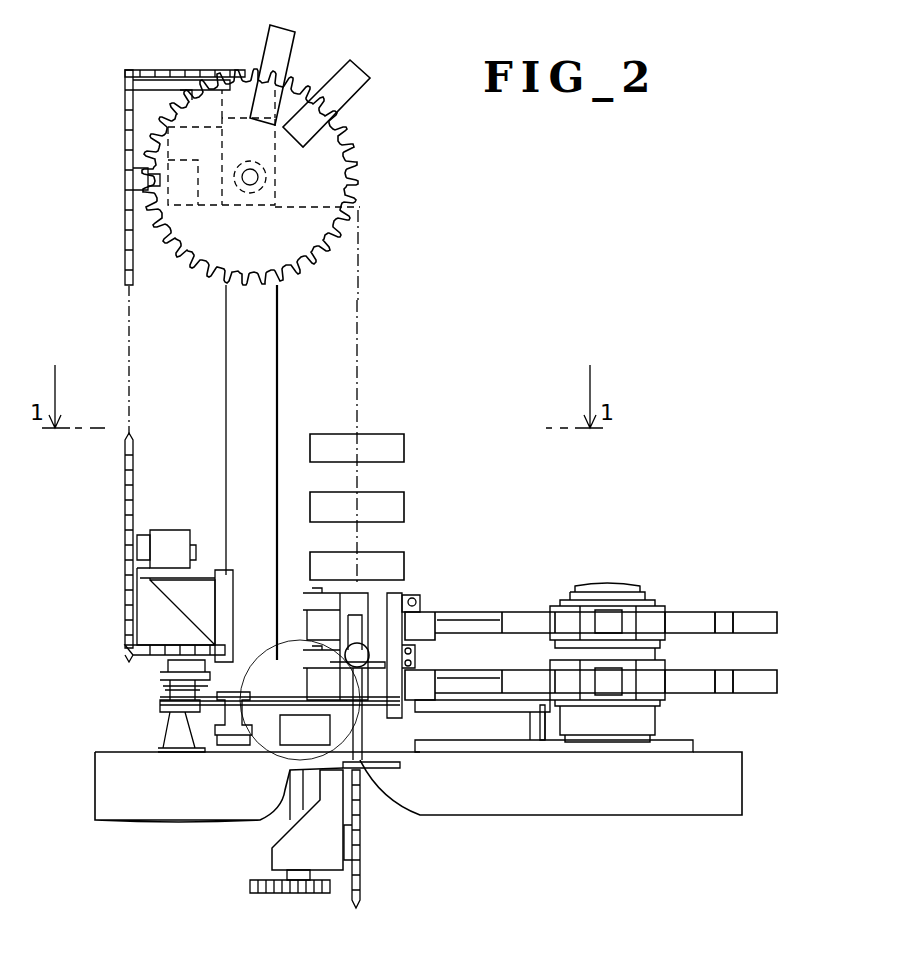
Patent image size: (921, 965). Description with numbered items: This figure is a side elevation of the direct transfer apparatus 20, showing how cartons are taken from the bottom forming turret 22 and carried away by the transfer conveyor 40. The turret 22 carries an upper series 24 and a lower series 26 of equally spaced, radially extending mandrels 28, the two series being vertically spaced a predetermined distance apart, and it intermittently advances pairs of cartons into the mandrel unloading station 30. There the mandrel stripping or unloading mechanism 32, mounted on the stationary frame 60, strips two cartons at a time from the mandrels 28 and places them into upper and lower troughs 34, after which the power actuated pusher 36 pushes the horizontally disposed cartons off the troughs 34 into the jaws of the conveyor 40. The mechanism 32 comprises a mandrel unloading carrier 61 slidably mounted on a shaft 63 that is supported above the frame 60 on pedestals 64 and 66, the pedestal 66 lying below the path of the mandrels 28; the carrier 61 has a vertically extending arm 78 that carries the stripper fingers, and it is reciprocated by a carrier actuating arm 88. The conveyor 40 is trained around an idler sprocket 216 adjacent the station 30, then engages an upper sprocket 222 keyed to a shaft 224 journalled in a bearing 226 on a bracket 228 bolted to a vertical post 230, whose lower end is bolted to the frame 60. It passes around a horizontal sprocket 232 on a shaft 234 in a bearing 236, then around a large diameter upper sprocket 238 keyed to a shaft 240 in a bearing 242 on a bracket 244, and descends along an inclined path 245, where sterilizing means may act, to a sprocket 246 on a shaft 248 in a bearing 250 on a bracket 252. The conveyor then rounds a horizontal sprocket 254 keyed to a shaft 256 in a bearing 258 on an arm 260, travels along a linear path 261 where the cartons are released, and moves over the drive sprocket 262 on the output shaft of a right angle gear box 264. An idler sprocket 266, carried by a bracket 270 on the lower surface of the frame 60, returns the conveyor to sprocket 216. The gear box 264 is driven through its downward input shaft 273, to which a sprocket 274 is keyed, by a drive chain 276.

The direct transfer apparatus 20 is at (568, 236).
The bottom forming turret 22 is at (632, 580).
The upper series of mandrels 24 is at (782, 620).
The lower series of mandrels 26 is at (782, 686).
The mandrel 28 is at (735, 640).
The mandrel unloading station 30 is at (425, 637).
The mandrel stripping or unloading mechanism 32 is at (412, 592).
The troughs 34 is at (451, 614).
The power actuated pusher 36 is at (382, 661).
The transfer conveyor 40 is at (372, 311).
The stationary frame 60 is at (95, 756).
The mandrel unloading carrier 61 is at (392, 592).
The shaft 63 is at (514, 714).
The pedestal 64 is at (176, 748).
The pedestal 66 is at (543, 722).
The vertically extending arm 78 is at (396, 594).
The carrier actuating arm 88 is at (165, 703).
The idler sprocket 216 is at (360, 775).
The upper sprocket 222 is at (360, 166).
The shaft 224 is at (258, 172).
The bearing 226 is at (286, 182).
The bracket 228 is at (358, 220).
The vertical post 230 is at (232, 358).
The sprocket 232 is at (178, 68).
The shaft 234 is at (180, 90).
The bearing 236 is at (190, 98).
The large diameter upper sprocket 238 is at (125, 137).
The shaft 240 is at (130, 178).
The bearing 242 is at (264, 148).
The bracket 244 is at (125, 226).
The inclined path 245 is at (125, 327).
The sprocket 246 is at (124, 502).
The shaft 248 is at (137, 549).
The bearing 250 is at (170, 538).
The bracket 252 is at (185, 601).
The horizontal sprocket 254 is at (125, 643).
The shaft 256 is at (170, 666).
The bearing 258 is at (165, 684).
The arm 260 is at (235, 740).
The linear path 261 is at (232, 630).
The drive sprocket 262 is at (372, 762).
The right angle gear box 264 is at (305, 730).
The idler sprocket 266 is at (362, 890).
The bracket 270 is at (283, 852).
The input shaft 273 is at (295, 815).
The sprocket 274 is at (300, 893).
The drive chain 276 is at (250, 885).